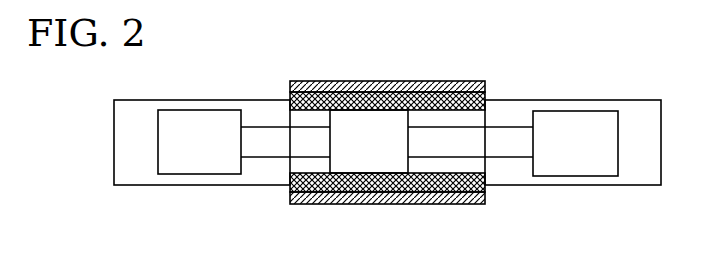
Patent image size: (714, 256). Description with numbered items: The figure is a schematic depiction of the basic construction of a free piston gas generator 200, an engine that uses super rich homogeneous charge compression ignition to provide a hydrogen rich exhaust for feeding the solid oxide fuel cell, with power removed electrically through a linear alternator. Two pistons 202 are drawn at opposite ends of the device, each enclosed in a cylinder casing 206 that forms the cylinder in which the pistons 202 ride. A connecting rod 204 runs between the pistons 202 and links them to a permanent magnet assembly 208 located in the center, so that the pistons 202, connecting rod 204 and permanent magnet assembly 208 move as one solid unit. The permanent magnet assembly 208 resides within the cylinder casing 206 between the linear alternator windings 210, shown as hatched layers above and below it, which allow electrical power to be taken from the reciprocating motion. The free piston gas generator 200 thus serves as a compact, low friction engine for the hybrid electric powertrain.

The free piston gas generator 200 is at (320, 50).
The pistons 202 is at (198, 132).
The connecting rod 204 is at (493, 140).
The cylinder casing 206 is at (165, 100).
The permanent magnet assembly 208 is at (373, 165).
The linear alternator windings 210 is at (387, 82).